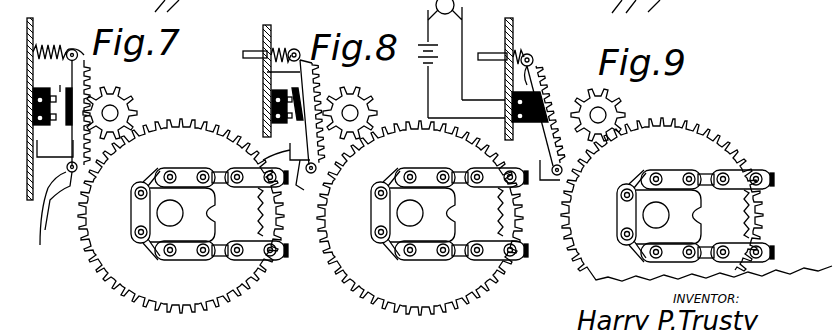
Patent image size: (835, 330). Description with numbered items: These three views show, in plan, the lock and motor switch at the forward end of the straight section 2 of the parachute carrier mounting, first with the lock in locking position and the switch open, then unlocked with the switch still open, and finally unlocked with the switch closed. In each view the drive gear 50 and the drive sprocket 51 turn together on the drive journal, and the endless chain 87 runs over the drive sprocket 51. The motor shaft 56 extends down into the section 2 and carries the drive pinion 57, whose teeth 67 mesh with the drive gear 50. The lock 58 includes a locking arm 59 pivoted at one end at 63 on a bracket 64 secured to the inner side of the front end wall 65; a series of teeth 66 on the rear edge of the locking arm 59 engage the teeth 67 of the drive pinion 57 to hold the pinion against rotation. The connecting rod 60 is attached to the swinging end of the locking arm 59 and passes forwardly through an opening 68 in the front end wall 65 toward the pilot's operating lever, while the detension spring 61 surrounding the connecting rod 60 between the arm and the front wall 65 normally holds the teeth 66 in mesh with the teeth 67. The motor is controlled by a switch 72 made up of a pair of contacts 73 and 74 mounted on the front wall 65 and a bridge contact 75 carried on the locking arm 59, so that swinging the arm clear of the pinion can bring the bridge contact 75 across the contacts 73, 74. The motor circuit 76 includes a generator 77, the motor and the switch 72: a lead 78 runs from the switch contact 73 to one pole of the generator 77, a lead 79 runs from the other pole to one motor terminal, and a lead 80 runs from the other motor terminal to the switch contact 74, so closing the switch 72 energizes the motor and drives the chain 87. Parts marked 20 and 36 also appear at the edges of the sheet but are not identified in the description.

In FIG. 7, the straight section 2 is at (256, 120).
In FIG. 7, the frame 20 is at (188, 0).
In FIG. 7, the shaft 36 is at (152, 0).
In FIG. 9, the shaft 36 is at (652, 0).
In FIG. 7, the drive gear 50 is at (107, 260).
In FIG. 8, the drive gear 50 is at (367, 267).
In FIG. 9, the drive gear 50 is at (593, 247).
In FIG. 7, the drive sprocket 51 is at (205, 216).
In FIG. 8, the drive sprocket 51 is at (437, 214).
In FIG. 9, the drive sprocket 51 is at (683, 216).
In FIG. 7, the motor shaft 56 is at (160, 124).
In FIG. 8, the motor shaft 56 is at (377, 116).
In FIG. 9, the motor shaft 56 is at (615, 117).
In FIG. 7, the drive pinion 57 is at (133, 114).
In FIG. 8, the drive pinion 57 is at (362, 108).
In FIG. 9, the drive pinion 57 is at (618, 108).
In FIG. 7, the lock 58 is at (86, 82).
In FIG. 8, the lock 58 is at (314, 70).
In FIG. 9, the lock 58 is at (551, 115).
In FIG. 7, the locking arm 59 is at (72, 90).
In FIG. 8, the locking arm 59 is at (263, 72).
In FIG. 9, the locking arm 59 is at (535, 67).
In FIG. 7, the connecting rod 60 is at (33, 38).
In FIG. 8, the connecting rod 60 is at (245, 52).
In FIG. 9, the connecting rod 60 is at (489, 52).
In FIG. 7, the detension spring 61 is at (62, 52).
In FIG. 8, the detension spring 61 is at (299, 50).
In FIG. 9, the detension spring 61 is at (518, 53).
In FIG. 7, the pivot 63 is at (70, 173).
In FIG. 8, the pivot 63 is at (311, 175).
In FIG. 9, the pivot 63 is at (560, 183).
In FIG. 7, the bracket 64 is at (68, 207).
In FIG. 8, the bracket 64 is at (306, 172).
In FIG. 9, the bracket 64 is at (547, 183).
In FIG. 7, the front end wall 65 is at (42, 236).
In FIG. 8, the front end wall 65 is at (267, 30).
In FIG. 9, the front end wall 65 is at (509, 24).
In FIG. 7, the teeth 66 is at (118, 84).
In FIG. 8, the teeth 66 is at (325, 78).
In FIG. 9, the teeth 66 is at (553, 74).
In FIG. 7, the teeth 67 is at (130, 98).
In FIG. 8, the teeth 67 is at (355, 95).
In FIG. 9, the teeth 67 is at (620, 98).
In FIG. 7, the opening 68 is at (48, 48).
In FIG. 8, the opening 68 is at (281, 44).
In FIG. 9, the opening 68 is at (515, 59).
In FIG. 7, the switch 72 is at (66, 120).
In FIG. 8, the switch 72 is at (297, 121).
In FIG. 9, the switch 72 is at (540, 124).
In FIG. 7, the contact 73 is at (70, 122).
In FIG. 8, the contact 73 is at (272, 123).
In FIG. 9, the contact 73 is at (538, 134).
In FIG. 7, the contact 74 is at (55, 100).
In FIG. 8, the contact 74 is at (272, 100).
In FIG. 9, the contact 74 is at (517, 89).
In FIG. 7, the bridge contact 75 is at (102, 152).
In FIG. 8, the bridge contact 75 is at (298, 142).
In FIG. 9, the bridge contact 75 is at (530, 54).
In FIG. 9, the motor circuit 76 is at (447, 87).
In FIG. 9, the generator 77 is at (431, 50).
In FIG. 9, the lead 78 is at (466, 118).
In FIG. 9, the lead 79 is at (427, 22).
In FIG. 9, the lead 80 is at (463, 42).
In FIG. 7, the endless chain 87 is at (270, 262).
In FIG. 8, the endless chain 87 is at (461, 235).
In FIG. 9, the endless chain 87 is at (714, 201).